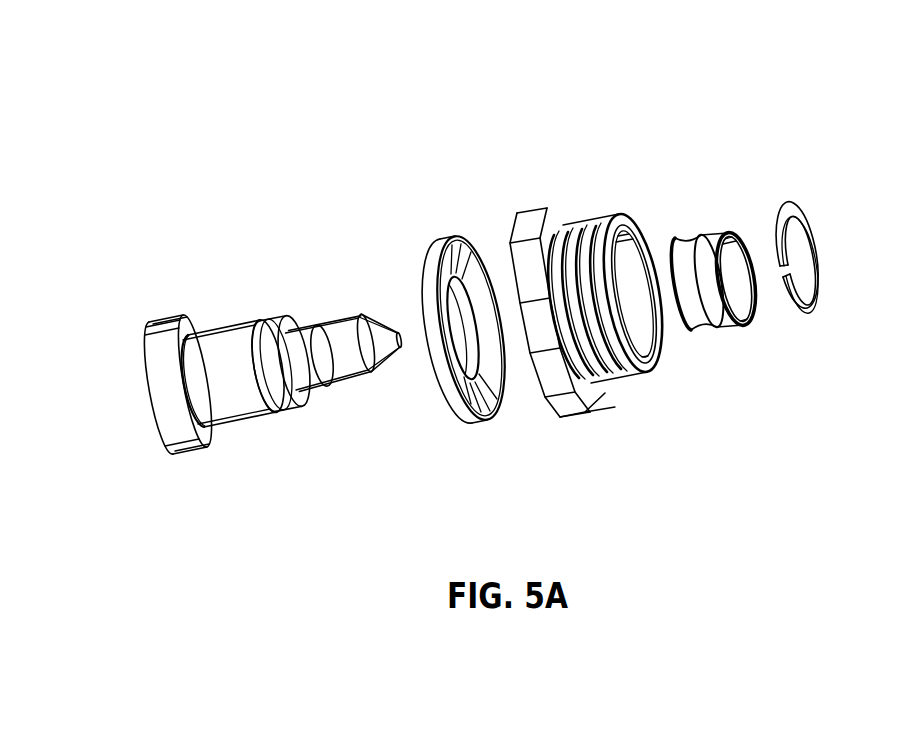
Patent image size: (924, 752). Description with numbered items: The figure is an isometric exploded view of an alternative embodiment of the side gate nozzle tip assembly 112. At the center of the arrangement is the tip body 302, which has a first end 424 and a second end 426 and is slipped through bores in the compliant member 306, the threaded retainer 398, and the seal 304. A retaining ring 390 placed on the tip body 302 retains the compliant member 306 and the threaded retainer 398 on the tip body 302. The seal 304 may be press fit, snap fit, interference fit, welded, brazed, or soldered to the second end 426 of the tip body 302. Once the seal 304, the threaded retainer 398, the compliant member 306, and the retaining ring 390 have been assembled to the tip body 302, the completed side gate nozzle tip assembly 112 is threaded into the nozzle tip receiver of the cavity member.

The side gate nozzle tip assembly 112 is at (362, 217).
The tip body 302 is at (252, 420).
The first end 424 is at (142, 320).
The second end 426 is at (390, 377).
The compliant member 306 is at (475, 423).
The threaded retainer 398 is at (617, 383).
The seal 304 is at (708, 323).
The retaining ring 390 is at (810, 317).